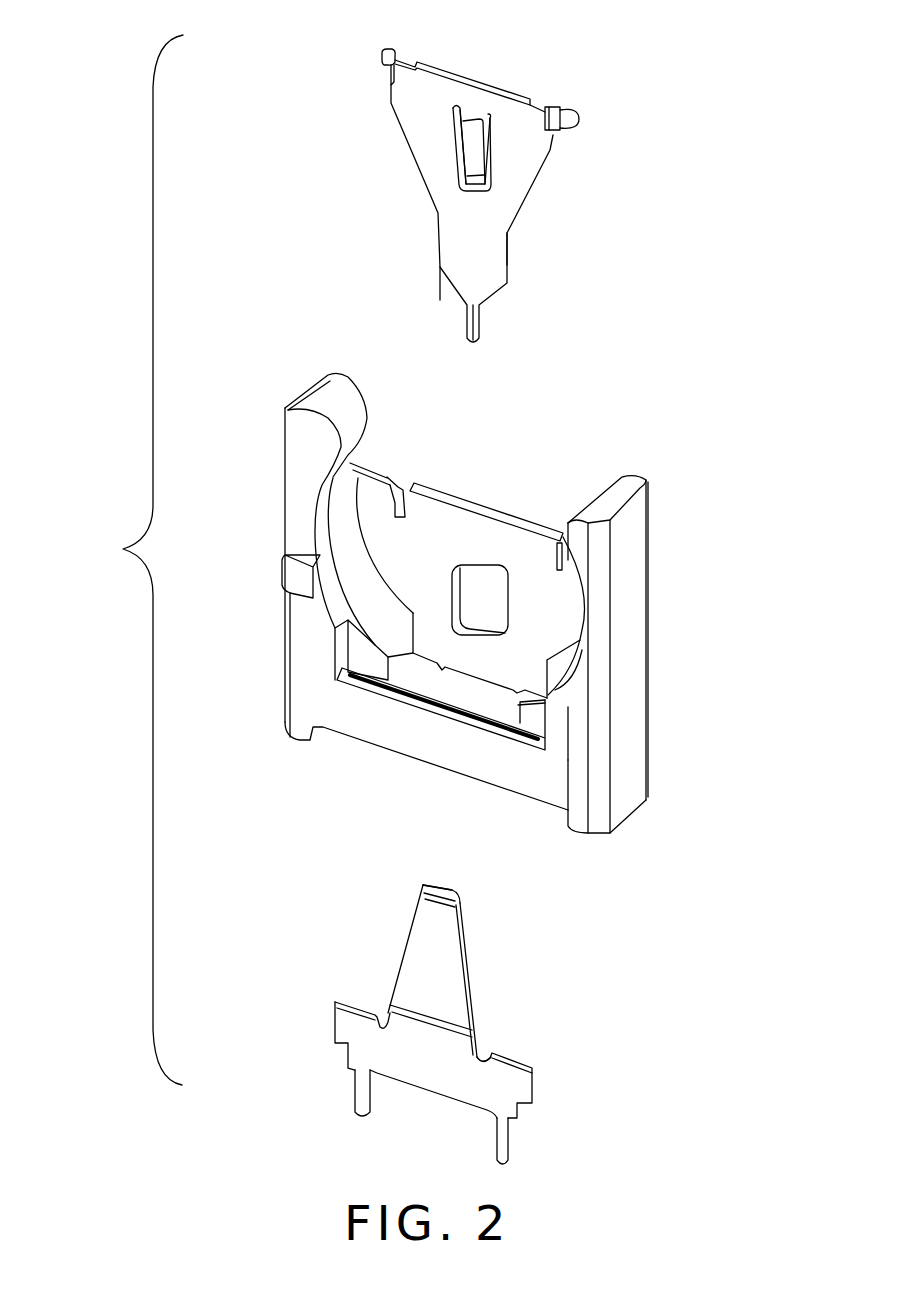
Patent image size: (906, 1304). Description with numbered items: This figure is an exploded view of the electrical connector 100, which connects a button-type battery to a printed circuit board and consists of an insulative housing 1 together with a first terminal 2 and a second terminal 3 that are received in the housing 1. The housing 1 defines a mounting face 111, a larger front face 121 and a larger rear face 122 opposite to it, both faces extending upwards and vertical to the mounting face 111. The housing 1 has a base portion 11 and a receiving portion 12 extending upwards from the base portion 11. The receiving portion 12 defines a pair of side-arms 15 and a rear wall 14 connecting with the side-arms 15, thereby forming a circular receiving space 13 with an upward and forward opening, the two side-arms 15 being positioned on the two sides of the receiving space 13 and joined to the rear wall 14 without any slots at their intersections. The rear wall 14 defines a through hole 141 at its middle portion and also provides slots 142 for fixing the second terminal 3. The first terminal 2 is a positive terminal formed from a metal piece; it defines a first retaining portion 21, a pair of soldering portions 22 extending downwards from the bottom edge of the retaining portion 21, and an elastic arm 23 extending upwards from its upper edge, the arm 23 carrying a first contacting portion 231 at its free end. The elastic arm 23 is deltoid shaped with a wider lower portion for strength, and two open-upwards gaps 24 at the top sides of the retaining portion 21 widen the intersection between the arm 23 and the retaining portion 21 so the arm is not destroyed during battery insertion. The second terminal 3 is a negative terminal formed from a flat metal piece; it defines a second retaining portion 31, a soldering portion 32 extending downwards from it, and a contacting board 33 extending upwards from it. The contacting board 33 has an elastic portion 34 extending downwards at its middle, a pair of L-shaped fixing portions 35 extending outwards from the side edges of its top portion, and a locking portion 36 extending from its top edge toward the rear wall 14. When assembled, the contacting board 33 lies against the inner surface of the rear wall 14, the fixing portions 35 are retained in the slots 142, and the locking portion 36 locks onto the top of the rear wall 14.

The electrical connector 100 is at (124, 560).
The insulative housing 1 is at (275, 391).
The base portion 11 is at (405, 735).
The mounting face 111 is at (628, 817).
The receiving portion 12 is at (628, 653).
The front face 121 is at (565, 713).
The rear face 122 is at (647, 623).
The receiving space 13 is at (383, 558).
The rear wall 14 is at (423, 548).
The through hole 141 is at (483, 595).
The slots 142 is at (385, 478).
The side-arms 15 is at (580, 590).
The first terminal 2 is at (325, 943).
The first retaining portion 21 is at (502, 1090).
The soldering portions 22 is at (503, 1145).
The elastic arm 23 is at (447, 985).
The first contacting portion 231 is at (467, 920).
The gaps 24 is at (488, 1055).
The second terminal 3 is at (357, 52).
The second retaining portion 31 is at (490, 267).
The soldering portion 32 is at (470, 325).
The contacting board 33 is at (522, 182).
The elastic portion 34 is at (472, 145).
The fixing portions 35 is at (580, 123).
The locking portion 36 is at (472, 78).